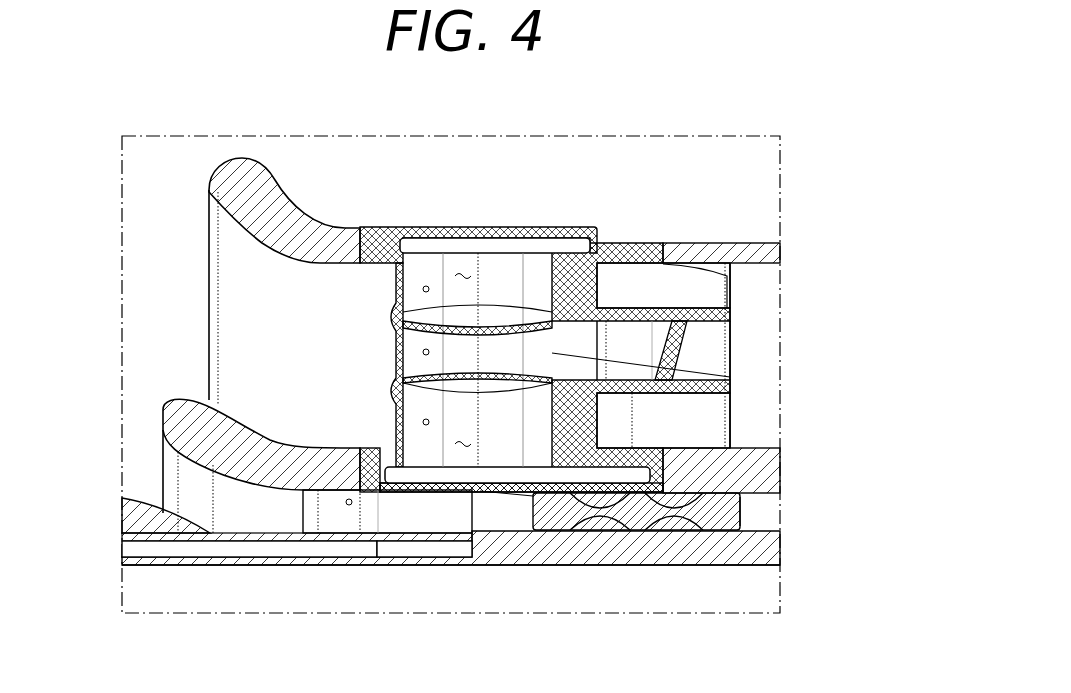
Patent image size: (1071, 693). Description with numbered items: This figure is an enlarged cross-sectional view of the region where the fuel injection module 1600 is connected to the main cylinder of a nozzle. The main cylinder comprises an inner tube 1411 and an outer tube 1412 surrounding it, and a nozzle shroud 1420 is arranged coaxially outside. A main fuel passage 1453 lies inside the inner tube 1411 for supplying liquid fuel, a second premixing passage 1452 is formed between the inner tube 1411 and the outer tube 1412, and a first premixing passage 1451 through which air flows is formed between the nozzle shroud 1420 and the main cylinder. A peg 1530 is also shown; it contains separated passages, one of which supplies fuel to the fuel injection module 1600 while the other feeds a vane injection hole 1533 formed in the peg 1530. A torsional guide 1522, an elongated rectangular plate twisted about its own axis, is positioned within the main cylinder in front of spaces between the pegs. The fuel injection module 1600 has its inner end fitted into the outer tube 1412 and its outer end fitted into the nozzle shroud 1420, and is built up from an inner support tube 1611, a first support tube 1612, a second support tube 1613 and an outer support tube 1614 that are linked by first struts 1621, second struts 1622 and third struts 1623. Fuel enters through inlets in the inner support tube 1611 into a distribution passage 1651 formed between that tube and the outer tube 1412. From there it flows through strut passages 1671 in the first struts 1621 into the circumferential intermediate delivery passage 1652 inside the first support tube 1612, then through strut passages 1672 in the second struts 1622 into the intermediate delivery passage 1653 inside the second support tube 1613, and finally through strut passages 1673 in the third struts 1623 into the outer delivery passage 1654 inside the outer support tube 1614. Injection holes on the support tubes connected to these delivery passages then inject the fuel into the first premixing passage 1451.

The fuel injection module 1600 is at (478, 223).
The inner support tube 1611 is at (377, 450).
The first support tube 1612 is at (405, 375).
The second support tube 1613 is at (626, 317).
The outer support tube 1614 is at (418, 233).
The first struts 1621 is at (712, 430).
The second struts 1622 is at (712, 350).
The third struts 1623 is at (712, 290).
The distribution passage 1651 is at (603, 477).
The intermediate delivery passage 1652 is at (515, 390).
The intermediate delivery passage 1653 is at (523, 317).
The outer delivery passage 1654 is at (532, 240).
The strut passages 1671 is at (463, 447).
The strut passages 1672 is at (732, 381).
The strut passages 1673 is at (464, 273).
The inner tube 1411 is at (755, 549).
The outer tube 1412 is at (755, 471).
The nozzle shroud 1420 is at (760, 253).
The first premixing passage 1451 is at (754, 336).
The second premixing passage 1452 is at (755, 513).
The main fuel passage 1453 is at (754, 596).
The torsional guide 1522 is at (720, 512).
The peg 1530 is at (428, 512).
The vane injection hole 1533 is at (349, 505).